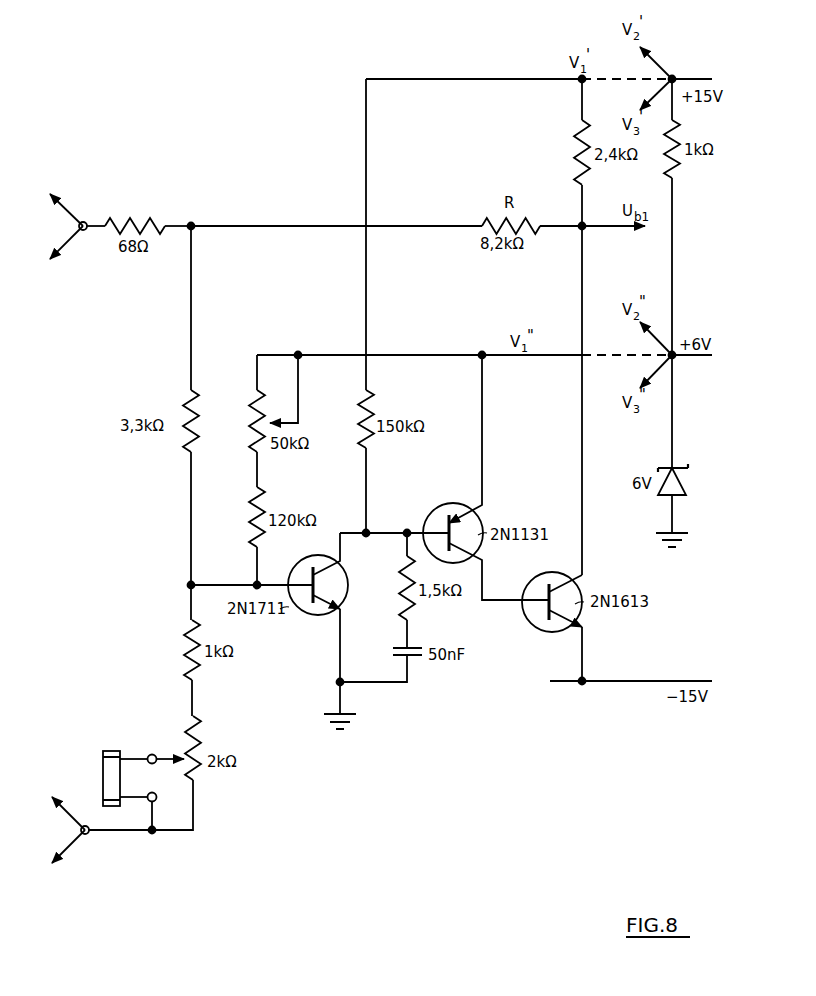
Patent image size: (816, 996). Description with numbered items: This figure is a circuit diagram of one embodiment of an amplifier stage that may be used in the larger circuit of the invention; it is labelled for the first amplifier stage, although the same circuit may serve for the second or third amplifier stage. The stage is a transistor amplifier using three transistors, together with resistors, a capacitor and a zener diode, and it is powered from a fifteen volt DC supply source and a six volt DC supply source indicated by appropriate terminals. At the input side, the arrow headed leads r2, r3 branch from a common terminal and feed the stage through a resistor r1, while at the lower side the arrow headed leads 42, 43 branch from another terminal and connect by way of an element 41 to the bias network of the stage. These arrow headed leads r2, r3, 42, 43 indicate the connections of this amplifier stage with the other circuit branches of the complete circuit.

The switching element (contact/coil) 41 is at (110, 782).
The arrow headed lead 42 is at (62, 803).
The arrow headed lead 43 is at (62, 860).
The resistor r1 (68 ohm) r1 is at (135, 217).
The arrow headed lead r2 is at (63, 201).
The arrow headed lead r3 is at (63, 254).